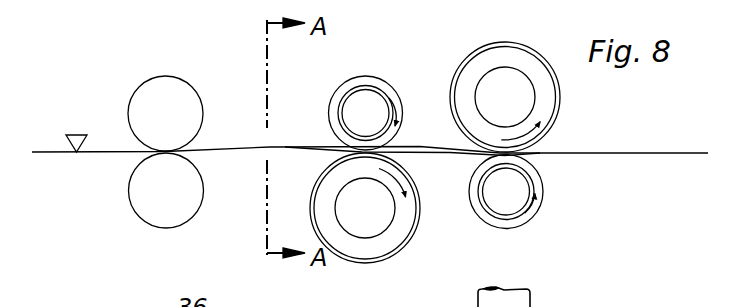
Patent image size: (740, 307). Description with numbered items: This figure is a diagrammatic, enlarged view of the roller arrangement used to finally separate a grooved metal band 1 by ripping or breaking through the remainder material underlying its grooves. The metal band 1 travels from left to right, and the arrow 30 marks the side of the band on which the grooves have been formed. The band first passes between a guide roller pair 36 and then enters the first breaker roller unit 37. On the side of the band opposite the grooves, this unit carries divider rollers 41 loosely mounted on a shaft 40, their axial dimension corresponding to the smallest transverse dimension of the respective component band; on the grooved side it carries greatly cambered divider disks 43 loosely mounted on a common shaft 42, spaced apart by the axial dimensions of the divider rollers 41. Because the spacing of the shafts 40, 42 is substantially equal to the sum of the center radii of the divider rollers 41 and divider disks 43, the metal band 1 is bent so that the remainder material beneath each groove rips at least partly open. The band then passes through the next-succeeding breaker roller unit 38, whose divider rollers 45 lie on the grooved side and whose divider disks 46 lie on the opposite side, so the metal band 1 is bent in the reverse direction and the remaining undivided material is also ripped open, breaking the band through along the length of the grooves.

The metal band 1 is at (50, 152).
The arrow indicating the grooved side 30 is at (77, 135).
The guide roller pair 36 is at (194, 108).
The breaker roller unit 37 is at (383, 82).
The breaker roller unit 38 is at (557, 125).
The shaft 40 is at (360, 217).
The divider rollers 41 is at (387, 247).
The shaft 42 is at (352, 110).
The divider disks 43 is at (390, 95).
The divider rollers 45 is at (555, 93).
The divider disks 46 is at (541, 200).